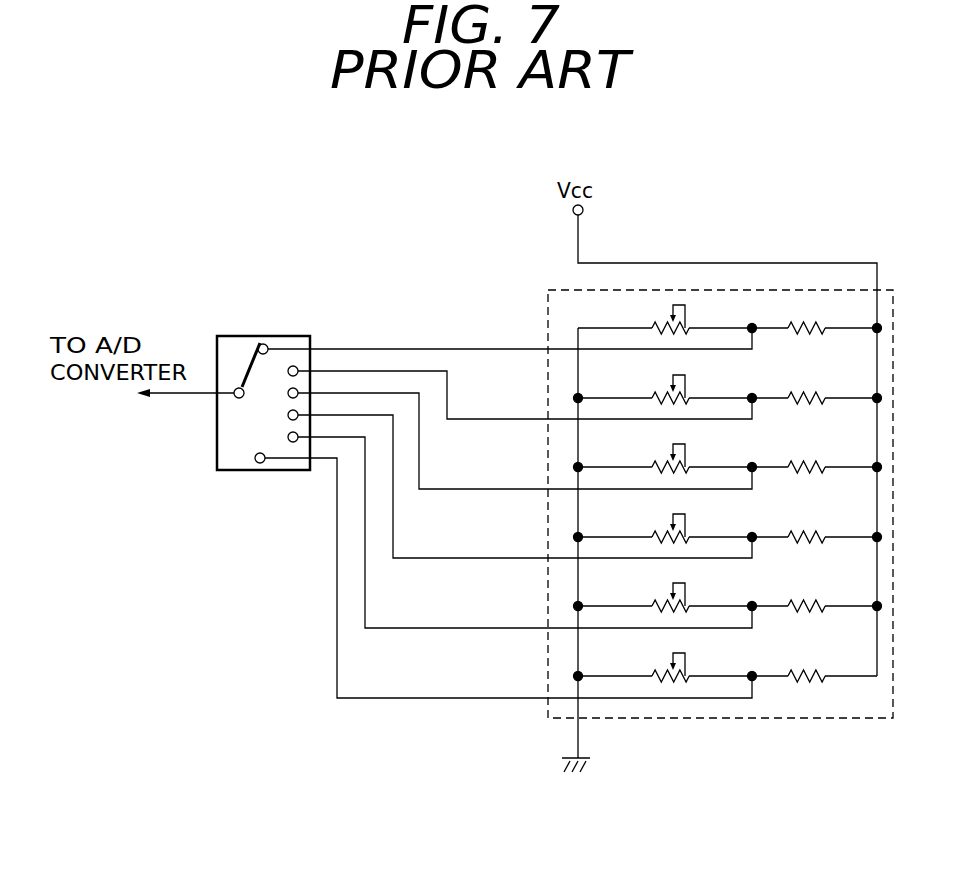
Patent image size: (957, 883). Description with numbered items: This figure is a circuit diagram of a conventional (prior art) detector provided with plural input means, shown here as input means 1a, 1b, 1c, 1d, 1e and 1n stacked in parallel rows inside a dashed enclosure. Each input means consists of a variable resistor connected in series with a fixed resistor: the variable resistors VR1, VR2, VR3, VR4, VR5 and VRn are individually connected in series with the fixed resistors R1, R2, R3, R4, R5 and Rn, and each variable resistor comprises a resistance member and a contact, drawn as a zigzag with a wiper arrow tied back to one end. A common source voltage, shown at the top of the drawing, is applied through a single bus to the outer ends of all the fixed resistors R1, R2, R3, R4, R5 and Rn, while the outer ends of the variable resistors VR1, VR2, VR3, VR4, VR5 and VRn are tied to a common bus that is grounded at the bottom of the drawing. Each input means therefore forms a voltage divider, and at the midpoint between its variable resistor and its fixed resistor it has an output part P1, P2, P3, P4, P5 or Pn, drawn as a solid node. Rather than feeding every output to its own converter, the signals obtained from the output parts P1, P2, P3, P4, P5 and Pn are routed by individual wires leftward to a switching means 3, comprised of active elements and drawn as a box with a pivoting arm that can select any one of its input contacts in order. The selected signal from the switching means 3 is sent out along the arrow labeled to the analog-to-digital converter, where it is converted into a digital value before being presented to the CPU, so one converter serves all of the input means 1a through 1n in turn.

The switching means 3 is at (285, 336).
The input means 1a is at (575, 327).
The input means 1b is at (590, 397).
The input means 1c is at (590, 446).
The input means 1d is at (590, 492).
The input means 1e is at (590, 537).
The input means 1n is at (571, 583).
The variable resistor VR1 is at (655, 314).
The variable resistor VR2 is at (655, 384).
The variable resistor VR3 is at (655, 453).
The variable resistor VR4 is at (655, 523).
The variable resistor VR5 is at (655, 592).
The variable resistor VRn is at (655, 662).
The fixed resistor R1 is at (806, 314).
The fixed resistor R2 is at (806, 384).
The fixed resistor R3 is at (806, 453).
The fixed resistor R4 is at (806, 523).
The fixed resistor R5 is at (806, 592).
The fixed resistor Rn is at (806, 662).
The output part P1 is at (756, 332).
The output part P2 is at (756, 402).
The output part P3 is at (756, 471).
The output part P4 is at (756, 541).
The output part P5 is at (756, 610).
The output part Pn is at (756, 680).